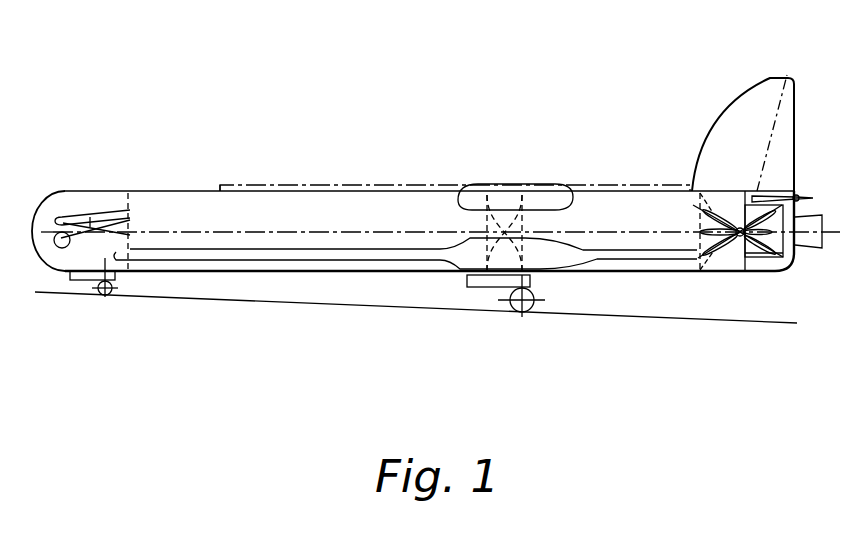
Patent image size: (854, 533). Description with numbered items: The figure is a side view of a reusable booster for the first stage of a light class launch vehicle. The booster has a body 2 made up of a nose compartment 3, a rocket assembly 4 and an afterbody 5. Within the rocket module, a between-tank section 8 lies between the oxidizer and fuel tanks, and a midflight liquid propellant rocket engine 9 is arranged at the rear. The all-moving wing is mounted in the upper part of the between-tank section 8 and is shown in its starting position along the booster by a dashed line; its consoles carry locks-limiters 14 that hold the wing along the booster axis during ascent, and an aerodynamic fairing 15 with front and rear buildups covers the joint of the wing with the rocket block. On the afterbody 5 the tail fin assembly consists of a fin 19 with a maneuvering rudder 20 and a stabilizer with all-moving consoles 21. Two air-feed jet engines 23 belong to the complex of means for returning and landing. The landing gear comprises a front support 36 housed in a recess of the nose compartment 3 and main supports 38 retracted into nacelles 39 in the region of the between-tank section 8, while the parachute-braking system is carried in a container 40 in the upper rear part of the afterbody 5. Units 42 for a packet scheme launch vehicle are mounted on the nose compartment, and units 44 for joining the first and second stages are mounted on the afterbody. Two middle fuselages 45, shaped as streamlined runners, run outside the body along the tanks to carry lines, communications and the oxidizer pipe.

The body 2 is at (375, 207).
The nose compartment 3 is at (57, 258).
The rocket assembly 4 is at (552, 222).
The afterbody 5 is at (758, 268).
The between-tank section 8 is at (506, 219).
The midflight liquid propellant rocket engine 9 is at (815, 245).
The locks-limiters 14 is at (238, 195).
The aerodynamic fairing 15 is at (555, 200).
The fin 19 is at (735, 157).
The maneuvering rudder 20 is at (775, 148).
The all-moving consoles 21 is at (741, 240).
The air-feed jet engines 23 is at (66, 218).
The front support 36 is at (103, 297).
The main supports 38 is at (515, 307).
The nacelles 39 is at (468, 257).
The container 40 is at (798, 192).
The units for a packet scheme launch vehicle 42 is at (115, 272).
The units for joining the first and second stages 44 is at (727, 260).
The middle fuselages 45 is at (227, 255).